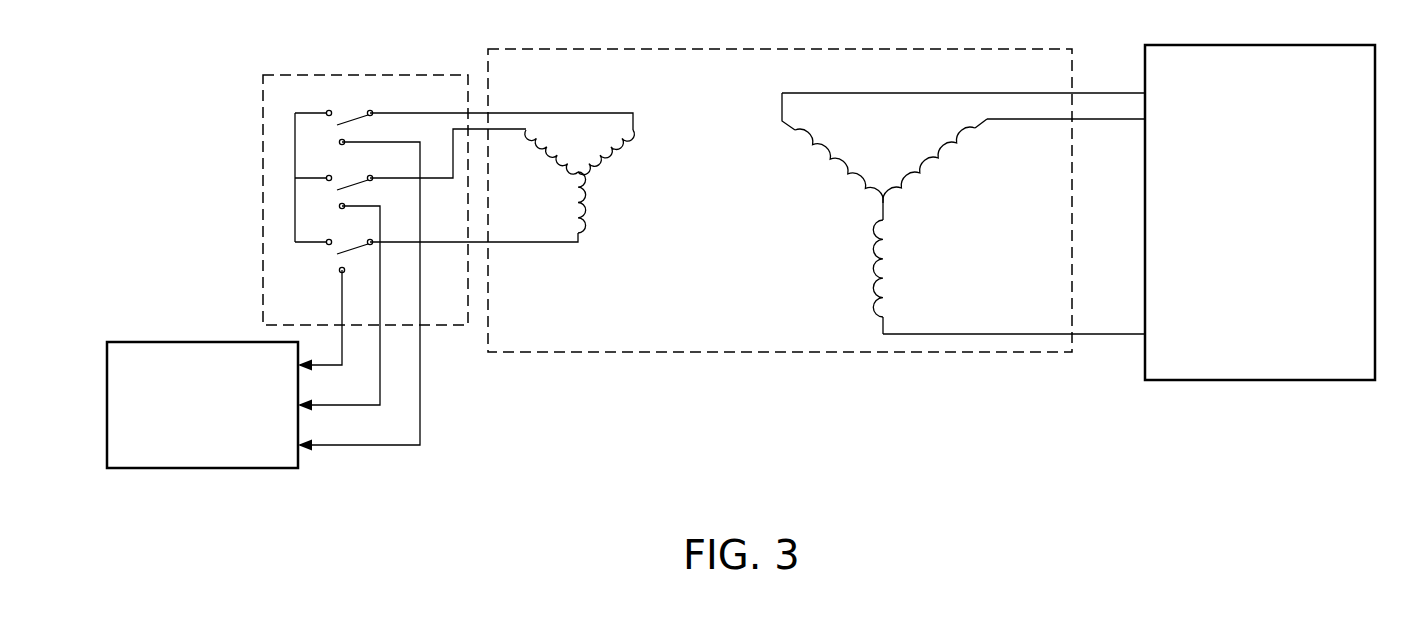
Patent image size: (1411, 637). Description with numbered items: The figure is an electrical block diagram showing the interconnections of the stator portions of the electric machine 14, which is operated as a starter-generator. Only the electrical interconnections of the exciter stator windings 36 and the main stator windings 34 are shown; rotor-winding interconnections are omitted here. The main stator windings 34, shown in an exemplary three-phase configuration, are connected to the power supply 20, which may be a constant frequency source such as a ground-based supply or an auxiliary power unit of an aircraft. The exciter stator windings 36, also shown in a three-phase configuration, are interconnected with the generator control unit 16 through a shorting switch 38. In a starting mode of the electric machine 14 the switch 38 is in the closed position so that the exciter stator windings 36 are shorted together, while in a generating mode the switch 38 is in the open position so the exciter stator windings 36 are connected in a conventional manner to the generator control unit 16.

The electric machine 14 is at (780, 230).
The generator control unit 16 is at (200, 470).
The power supply 20 is at (1260, 382).
The main stator windings 34 is at (875, 225).
The exciter stator windings 36 is at (586, 203).
The shorting switch 38 is at (262, 115).